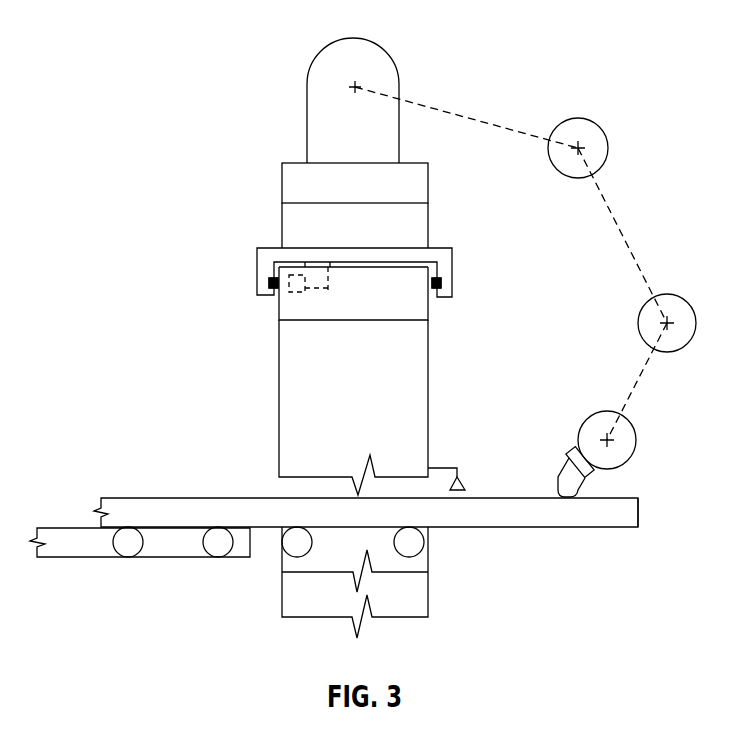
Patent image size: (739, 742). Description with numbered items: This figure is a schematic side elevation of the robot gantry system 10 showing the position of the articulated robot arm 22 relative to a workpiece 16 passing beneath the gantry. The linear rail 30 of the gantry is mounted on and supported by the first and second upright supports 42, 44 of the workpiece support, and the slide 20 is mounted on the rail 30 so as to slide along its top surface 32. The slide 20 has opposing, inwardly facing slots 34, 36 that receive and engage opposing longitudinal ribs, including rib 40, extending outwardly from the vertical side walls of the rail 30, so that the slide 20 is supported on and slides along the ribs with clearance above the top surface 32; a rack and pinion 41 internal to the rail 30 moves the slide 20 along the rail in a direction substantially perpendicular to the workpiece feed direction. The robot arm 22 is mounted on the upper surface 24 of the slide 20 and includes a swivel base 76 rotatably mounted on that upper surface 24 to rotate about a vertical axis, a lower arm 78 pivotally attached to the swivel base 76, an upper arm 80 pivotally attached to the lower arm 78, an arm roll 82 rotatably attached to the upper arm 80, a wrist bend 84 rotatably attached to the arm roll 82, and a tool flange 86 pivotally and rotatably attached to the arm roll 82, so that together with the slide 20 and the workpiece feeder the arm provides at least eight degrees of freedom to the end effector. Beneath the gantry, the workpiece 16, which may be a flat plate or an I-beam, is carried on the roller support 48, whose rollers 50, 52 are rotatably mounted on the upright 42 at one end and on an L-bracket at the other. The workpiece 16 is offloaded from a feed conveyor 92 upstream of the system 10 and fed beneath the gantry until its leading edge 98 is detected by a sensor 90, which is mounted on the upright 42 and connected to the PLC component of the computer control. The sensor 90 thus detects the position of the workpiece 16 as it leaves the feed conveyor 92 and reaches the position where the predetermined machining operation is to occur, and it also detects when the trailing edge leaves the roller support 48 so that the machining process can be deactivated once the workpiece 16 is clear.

The robot gantry system 10 is at (407, 82).
The swivel base 76 is at (415, 185).
The slide 20 is at (362, 246).
The upper surface 24 is at (438, 250).
The top surface 32 is at (345, 262).
The slot 36 is at (270, 281).
The slot 34 is at (355, 283).
The rib 40 is at (438, 289).
The rack and pinion 41 is at (325, 300).
The linear rail 30 is at (429, 318).
The first upright support 42 is at (422, 375).
The sensor 90 is at (443, 468).
The workpiece 16 is at (582, 518).
The leading edge 98 is at (638, 513).
The feed conveyor 92 is at (82, 548).
The roller 50 is at (293, 546).
The roller 52 is at (420, 542).
The roller support 48 is at (438, 573).
The second upright support 44 is at (292, 564).
The articulated robot arm 22 is at (603, 126).
The lower arm 78 is at (462, 113).
The upper arm 80 is at (627, 236).
The arm roll 82 is at (641, 384).
The wrist bend 84 is at (596, 471).
The tool flange 86 is at (567, 461).